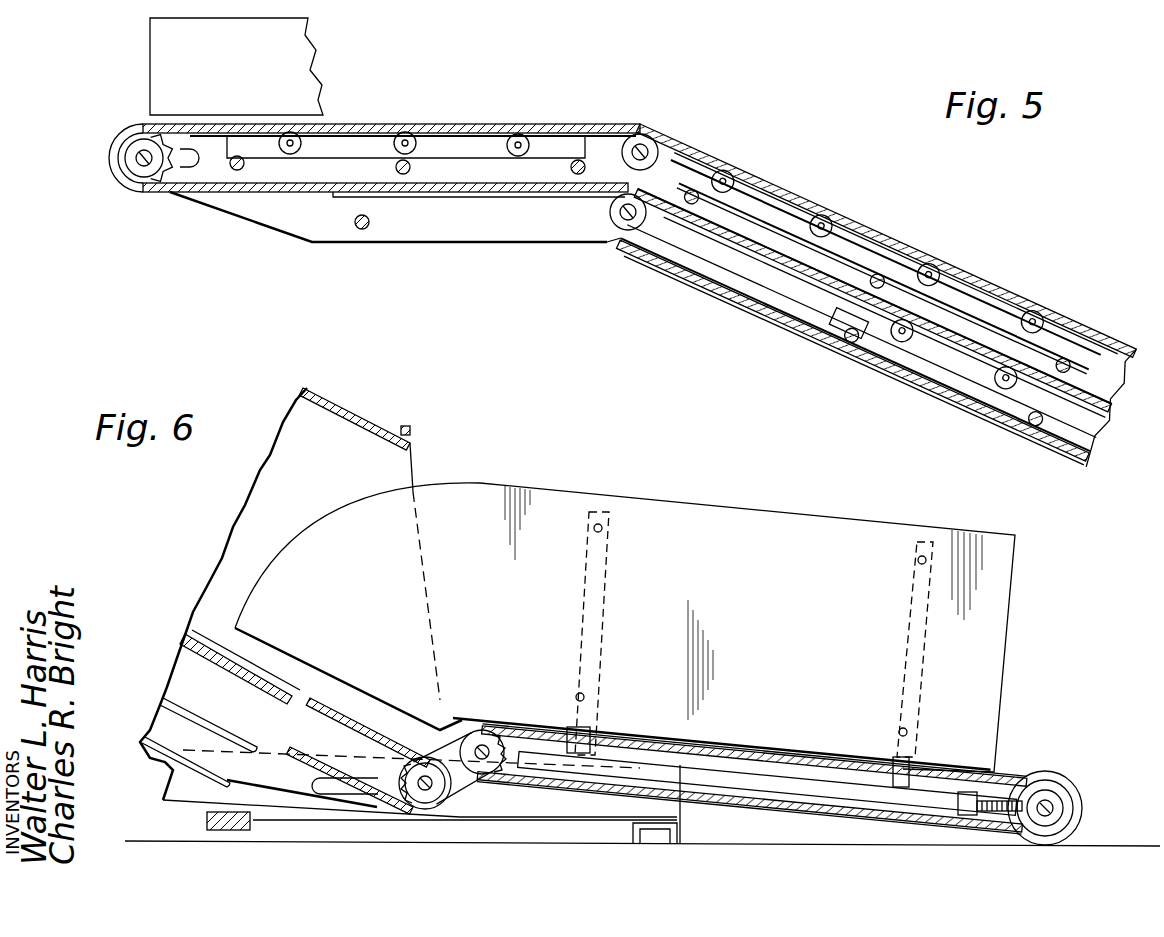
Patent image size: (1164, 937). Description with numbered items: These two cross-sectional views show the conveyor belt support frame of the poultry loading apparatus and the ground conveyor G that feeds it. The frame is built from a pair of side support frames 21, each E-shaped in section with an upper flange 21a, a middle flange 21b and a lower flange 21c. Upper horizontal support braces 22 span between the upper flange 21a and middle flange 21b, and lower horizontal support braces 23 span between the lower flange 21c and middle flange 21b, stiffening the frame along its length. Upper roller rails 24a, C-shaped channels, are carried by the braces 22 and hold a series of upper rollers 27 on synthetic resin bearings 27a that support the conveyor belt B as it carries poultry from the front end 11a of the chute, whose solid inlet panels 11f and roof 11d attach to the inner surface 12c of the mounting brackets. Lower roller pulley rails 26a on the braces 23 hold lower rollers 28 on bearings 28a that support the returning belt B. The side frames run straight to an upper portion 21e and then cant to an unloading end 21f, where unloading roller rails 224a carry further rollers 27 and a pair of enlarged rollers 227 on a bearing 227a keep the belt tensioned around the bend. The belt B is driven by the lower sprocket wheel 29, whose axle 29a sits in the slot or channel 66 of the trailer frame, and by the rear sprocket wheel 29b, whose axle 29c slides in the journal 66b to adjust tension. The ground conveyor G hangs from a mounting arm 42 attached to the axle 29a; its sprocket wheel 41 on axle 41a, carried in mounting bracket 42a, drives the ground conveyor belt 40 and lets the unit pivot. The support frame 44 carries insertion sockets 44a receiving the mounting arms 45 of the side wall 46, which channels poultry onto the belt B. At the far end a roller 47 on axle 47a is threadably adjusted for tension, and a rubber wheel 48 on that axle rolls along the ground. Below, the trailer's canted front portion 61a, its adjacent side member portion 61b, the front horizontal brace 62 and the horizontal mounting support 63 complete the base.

In FIG. 5, the inlet panels 11f is at (170, 45).
In FIG. 6, the front end 11a is at (417, 457).
In FIG. 6, the roof 11d is at (350, 405).
In FIG. 6, the inner surface 12c is at (410, 428).
In FIG. 6, the side support frames 21 is at (178, 672).
In FIG. 5, the upper flange 21a is at (203, 127).
In FIG. 6, the upper flange 21a is at (185, 652).
In FIG. 5, the middle flange 21b is at (700, 257).
In FIG. 6, the middle flange 21b is at (165, 700).
In FIG. 5, the lower flange 21c is at (660, 266).
In FIG. 6, the lower flange 21c is at (160, 722).
In FIG. 5, the upper portion 21e is at (607, 243).
In FIG. 5, the unloading end 21f is at (423, 227).
In FIG. 5, the upper horizontal support braces 22 is at (576, 158).
In FIG. 5, the lower horizontal support braces 23 is at (362, 232).
In FIG. 5, the upper roller rails 24a is at (773, 177).
In FIG. 5, the unloading roller rails 224a is at (455, 147).
In FIG. 5, the lower roller pulley rails 26a is at (870, 338).
In FIG. 5, the upper rollers 27 is at (395, 137).
In FIG. 5, the bearings 27a is at (293, 135).
In FIG. 5, the lower rollers 28 is at (995, 380).
In FIG. 5, the bearings 28a is at (905, 340).
In FIG. 5, the enlarged rollers 227 is at (655, 138).
In FIG. 5, the bearing 227a is at (639, 142).
In FIG. 6, the lower sprocket wheel 29 is at (430, 803).
In FIG. 6, the axle 29a is at (417, 803).
In FIG. 5, the rear sprocket wheel 29b is at (123, 173).
In FIG. 5, the axle 29c is at (138, 156).
In FIG. 5, the conveyor belt B is at (378, 128).
In FIG. 6, the ground conveyor G is at (1008, 618).
In FIG. 6, the ground conveyor belt 40 is at (995, 780).
In FIG. 6, the sprocket wheel 41 is at (503, 770).
In FIG. 6, the axle 41a is at (482, 745).
In FIG. 6, the mounting arm 42 is at (443, 742).
In FIG. 6, the mounting bracket 42a is at (507, 740).
In FIG. 6, the support frame 44 is at (725, 764).
In FIG. 6, the insertion sockets 44a is at (587, 737).
In FIG. 6, the mounting arms 45 is at (612, 566).
In FIG. 6, the side wall 46 is at (773, 577).
In FIG. 6, the roller 47 is at (1058, 805).
In FIG. 6, the axle 47a is at (1048, 803).
In FIG. 6, the wheel 48 is at (1081, 792).
In FIG. 6, the front portion 61a is at (503, 790).
In FIG. 6, the base plate 61b is at (276, 802).
In FIG. 6, the front horizontal brace 62 is at (680, 838).
In FIG. 6, the horizontal mounting support 63 is at (205, 820).
In FIG. 6, the slot or channel 66 is at (332, 795).
In FIG. 5, the journal or channel 66b is at (185, 160).